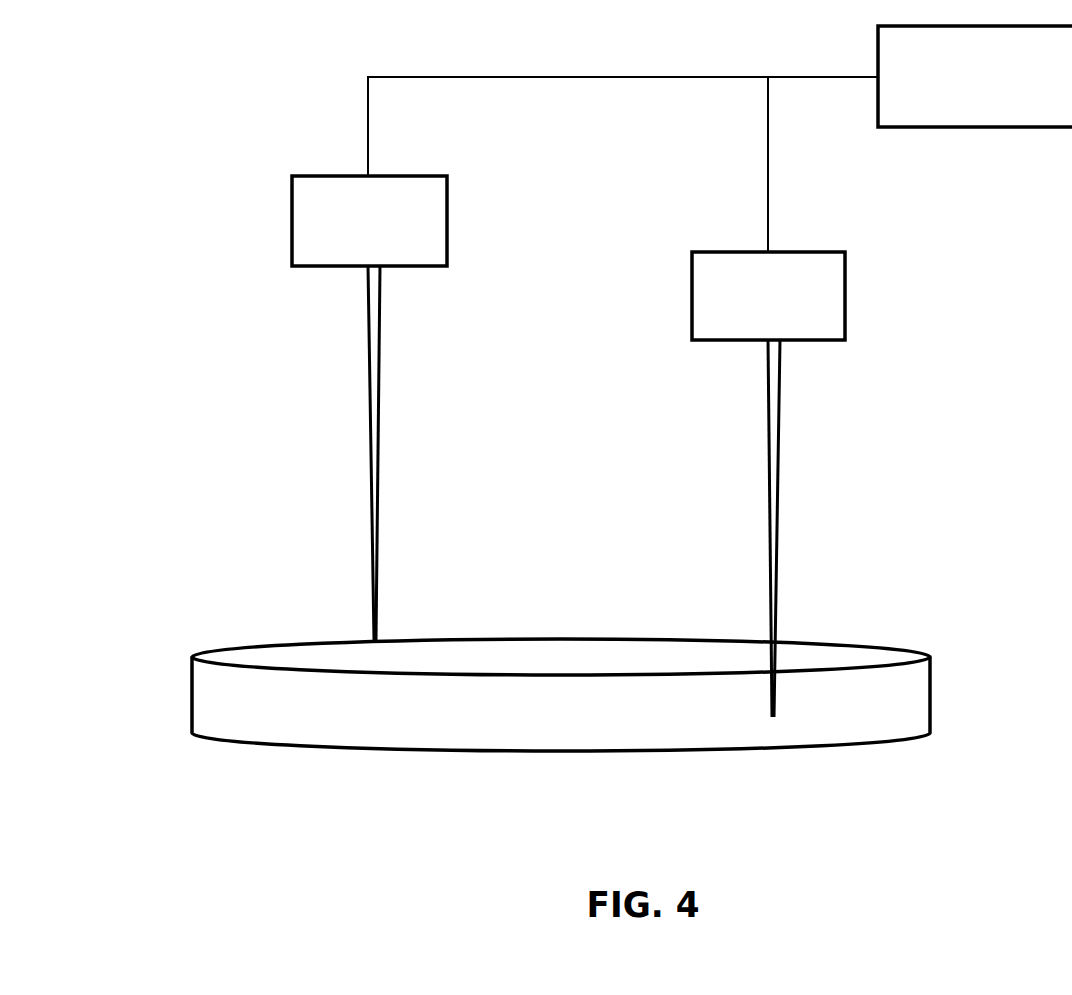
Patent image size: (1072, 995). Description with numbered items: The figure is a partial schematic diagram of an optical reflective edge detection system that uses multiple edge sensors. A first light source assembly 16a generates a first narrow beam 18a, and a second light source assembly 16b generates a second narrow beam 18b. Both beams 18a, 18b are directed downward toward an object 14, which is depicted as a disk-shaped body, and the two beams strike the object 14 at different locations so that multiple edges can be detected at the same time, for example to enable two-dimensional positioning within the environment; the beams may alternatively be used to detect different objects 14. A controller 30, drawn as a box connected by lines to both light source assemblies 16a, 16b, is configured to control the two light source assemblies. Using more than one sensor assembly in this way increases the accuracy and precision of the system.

The controller 30 is at (878, 42).
The first light source assembly 16a is at (328, 223).
The second light source assembly 16b is at (733, 298).
The first narrow beam 18a is at (368, 490).
The second narrow beam 18b is at (768, 545).
The object 14 is at (373, 731).